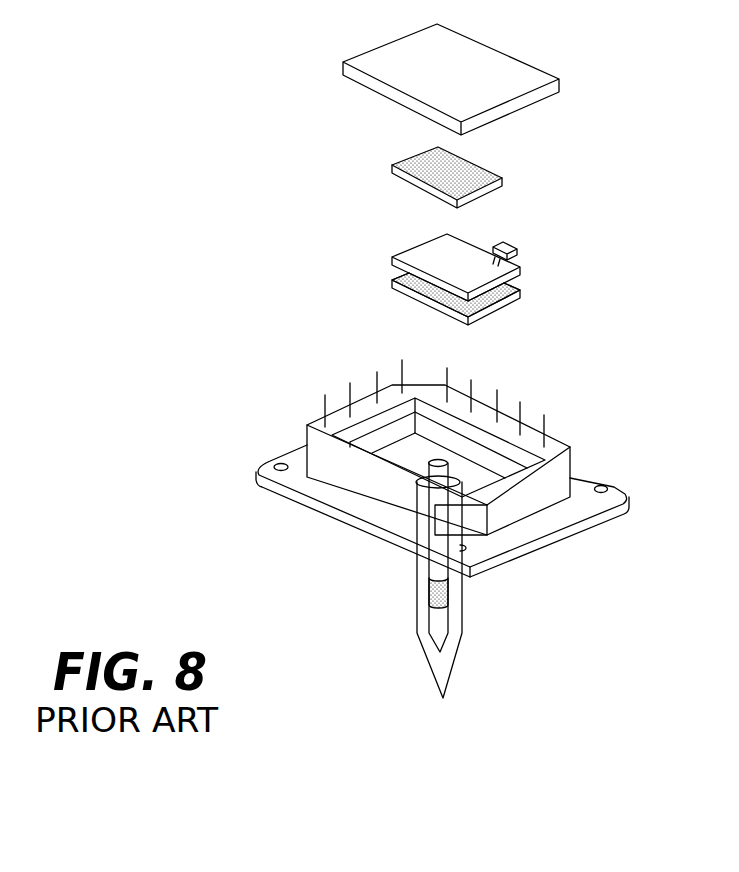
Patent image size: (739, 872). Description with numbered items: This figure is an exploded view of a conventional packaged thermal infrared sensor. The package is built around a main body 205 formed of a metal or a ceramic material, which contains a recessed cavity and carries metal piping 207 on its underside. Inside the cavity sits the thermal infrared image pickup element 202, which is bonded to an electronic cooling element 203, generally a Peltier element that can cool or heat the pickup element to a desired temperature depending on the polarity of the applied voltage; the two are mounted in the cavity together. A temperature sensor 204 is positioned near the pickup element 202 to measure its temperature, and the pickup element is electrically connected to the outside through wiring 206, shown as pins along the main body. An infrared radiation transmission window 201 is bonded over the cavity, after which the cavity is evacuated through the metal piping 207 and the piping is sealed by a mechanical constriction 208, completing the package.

The infrared radiation transmission window 201 is at (447, 53).
The thermal infrared image pickup element 202 is at (480, 175).
The electronic cooling element 203 is at (455, 255).
The temperature sensor 204 is at (510, 240).
The main body 205 is at (558, 450).
The wiring 206 is at (375, 375).
The metal piping 207 is at (457, 648).
The mechanical constriction 208 is at (427, 657).